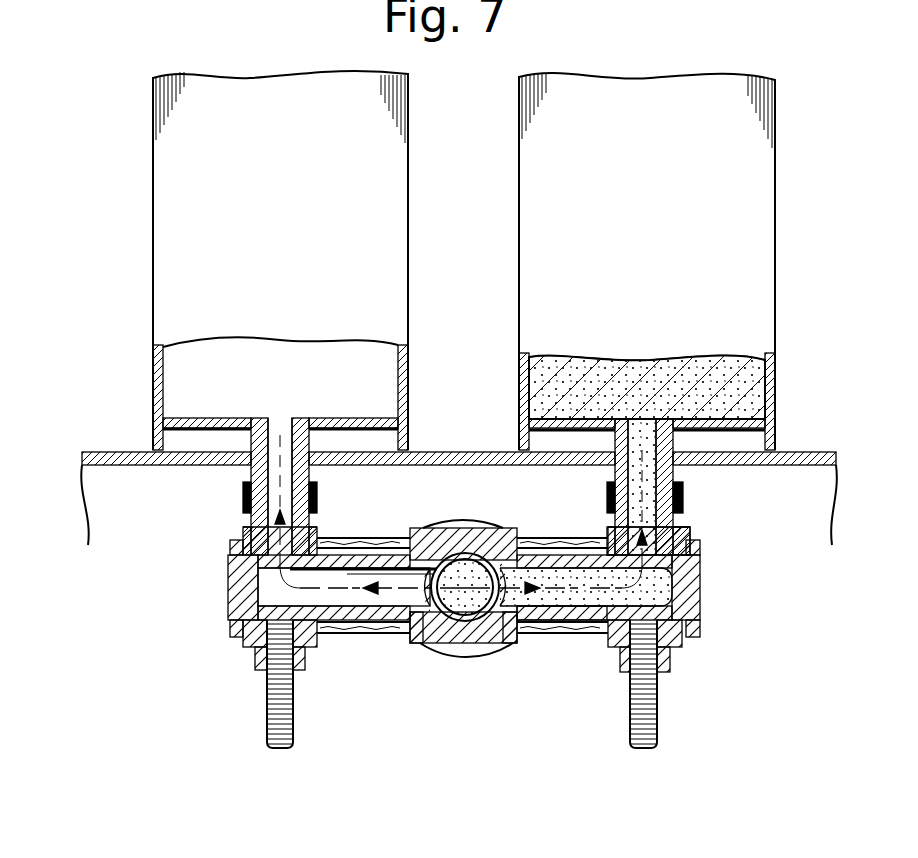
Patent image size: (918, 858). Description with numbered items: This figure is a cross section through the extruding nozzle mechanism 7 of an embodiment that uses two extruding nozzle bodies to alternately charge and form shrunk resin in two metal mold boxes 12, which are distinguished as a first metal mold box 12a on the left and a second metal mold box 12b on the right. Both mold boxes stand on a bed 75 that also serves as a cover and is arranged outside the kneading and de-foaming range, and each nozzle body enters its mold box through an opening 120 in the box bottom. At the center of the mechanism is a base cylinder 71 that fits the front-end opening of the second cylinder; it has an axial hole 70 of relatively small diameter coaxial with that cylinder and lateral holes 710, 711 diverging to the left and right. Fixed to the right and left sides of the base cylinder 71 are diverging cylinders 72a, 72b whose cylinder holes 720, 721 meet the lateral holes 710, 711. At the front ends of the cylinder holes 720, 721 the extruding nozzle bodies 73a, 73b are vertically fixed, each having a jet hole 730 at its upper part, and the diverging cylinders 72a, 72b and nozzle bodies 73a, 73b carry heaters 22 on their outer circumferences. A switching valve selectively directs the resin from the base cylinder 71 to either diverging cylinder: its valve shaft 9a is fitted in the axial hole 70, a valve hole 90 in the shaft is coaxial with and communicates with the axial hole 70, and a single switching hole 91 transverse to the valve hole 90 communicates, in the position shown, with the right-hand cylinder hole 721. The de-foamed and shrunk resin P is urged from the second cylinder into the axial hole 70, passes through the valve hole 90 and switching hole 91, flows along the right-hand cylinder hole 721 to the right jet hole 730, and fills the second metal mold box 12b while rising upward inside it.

The metal mold box 12 is at (413, 229).
The first metal mold box 12a is at (160, 377).
The second metal mold box 12b is at (777, 373).
The de-foamed and shrinked resin P is at (717, 353).
The opening of metal mold box 120 is at (275, 420).
The bed 75 is at (818, 468).
The extruding nozzle mechanism 7 is at (497, 735).
The jet hole 730 is at (250, 443).
The first extruding nozzle body 73a is at (243, 515).
The second extruding nozzle body 73b is at (686, 530).
The heater 22 is at (345, 542).
The cylinder hole 720 is at (334, 630).
The first diverging cylinder 72a is at (386, 556).
The second diverging cylinder 72b is at (545, 556).
The axial hole 70 is at (447, 653).
The base cylinder 71 is at (465, 650).
The switching hole 91 is at (498, 652).
The valve hole 90 is at (446, 556).
The valve shaft 9a is at (463, 566).
The first lateral hole 710 is at (404, 634).
The second lateral hole 711 is at (522, 636).
The cylinder hole 721 is at (582, 637).